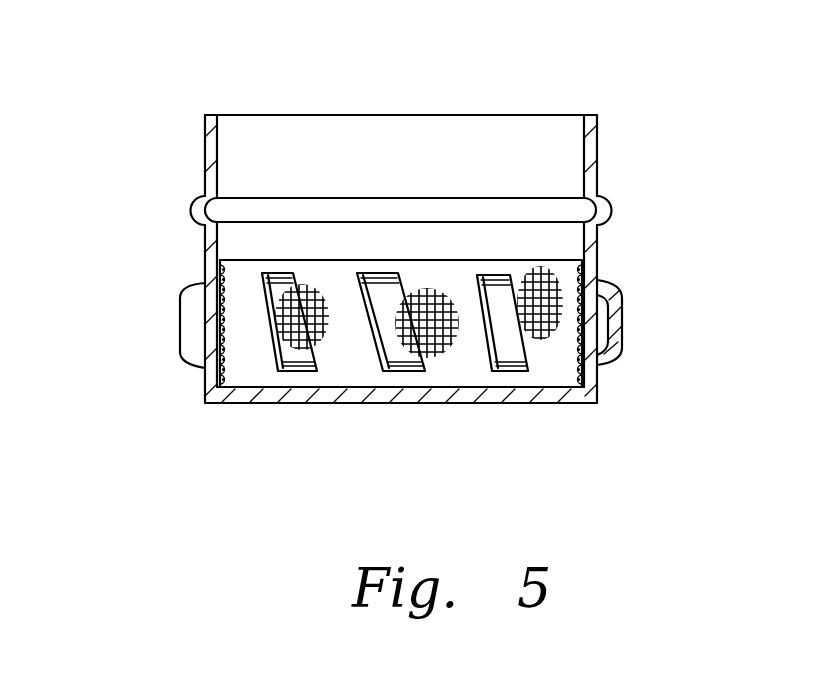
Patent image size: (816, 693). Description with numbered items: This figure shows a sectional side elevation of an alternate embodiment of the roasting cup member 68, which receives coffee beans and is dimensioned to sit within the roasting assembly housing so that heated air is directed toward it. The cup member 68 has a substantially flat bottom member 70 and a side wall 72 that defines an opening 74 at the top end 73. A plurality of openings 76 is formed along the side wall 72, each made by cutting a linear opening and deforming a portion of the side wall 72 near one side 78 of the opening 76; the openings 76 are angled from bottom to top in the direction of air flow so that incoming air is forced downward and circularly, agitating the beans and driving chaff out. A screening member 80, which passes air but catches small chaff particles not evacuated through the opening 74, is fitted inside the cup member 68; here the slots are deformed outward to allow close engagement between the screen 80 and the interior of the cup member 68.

The cup member 68 is at (595, 139).
The bottom member 70 is at (513, 405).
The side wall 72 is at (597, 184).
The top end 73 is at (586, 114).
The opening 74 is at (362, 113).
The openings 76 is at (603, 320).
The one side of the opening 78 is at (190, 320).
The screening member 80 is at (260, 260).